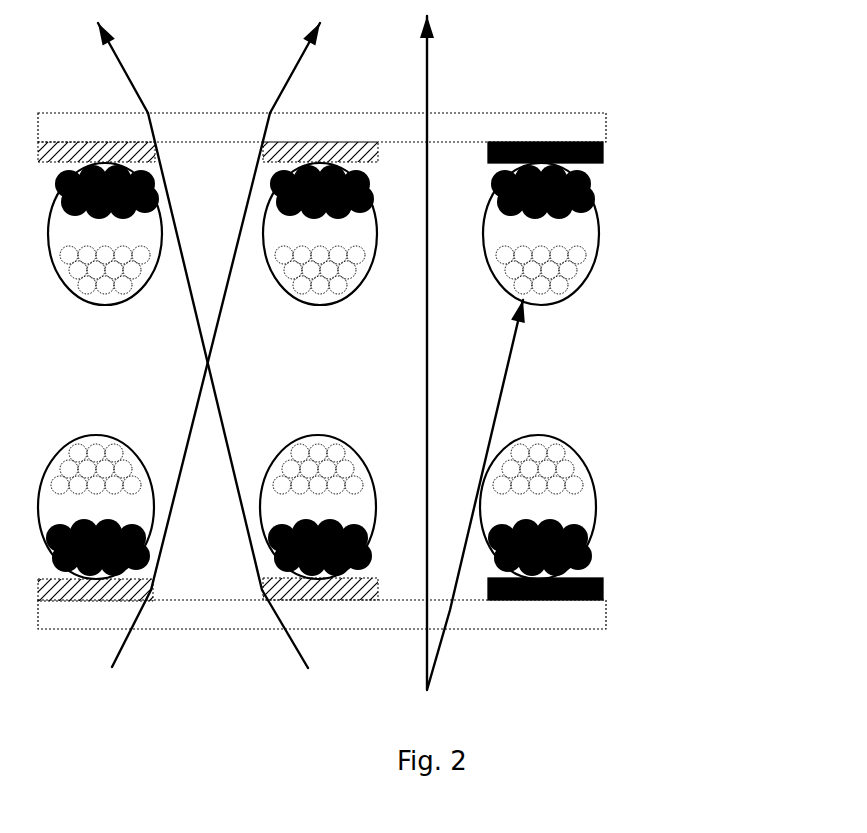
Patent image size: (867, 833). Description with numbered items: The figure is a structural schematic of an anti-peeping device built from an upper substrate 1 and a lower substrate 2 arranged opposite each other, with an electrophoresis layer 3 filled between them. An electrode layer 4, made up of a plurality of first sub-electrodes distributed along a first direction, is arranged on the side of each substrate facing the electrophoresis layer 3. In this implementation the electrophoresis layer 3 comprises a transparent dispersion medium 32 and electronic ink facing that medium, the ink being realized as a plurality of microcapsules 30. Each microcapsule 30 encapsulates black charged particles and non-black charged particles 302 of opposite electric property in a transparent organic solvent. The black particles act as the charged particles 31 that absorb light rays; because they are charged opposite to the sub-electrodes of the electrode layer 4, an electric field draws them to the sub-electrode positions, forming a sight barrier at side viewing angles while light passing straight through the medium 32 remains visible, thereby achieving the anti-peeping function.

The upper substrate 1 is at (575, 124).
The lower substrate 2 is at (560, 615).
The electrophoresis layer 3 is at (740, 178).
The electrode layer 4 is at (603, 153).
The microcapsule 30 is at (600, 237).
The charged particles 31 is at (590, 197).
The non-black charged particles 302 is at (570, 273).
The transparent dispersion medium 32 is at (537, 381).